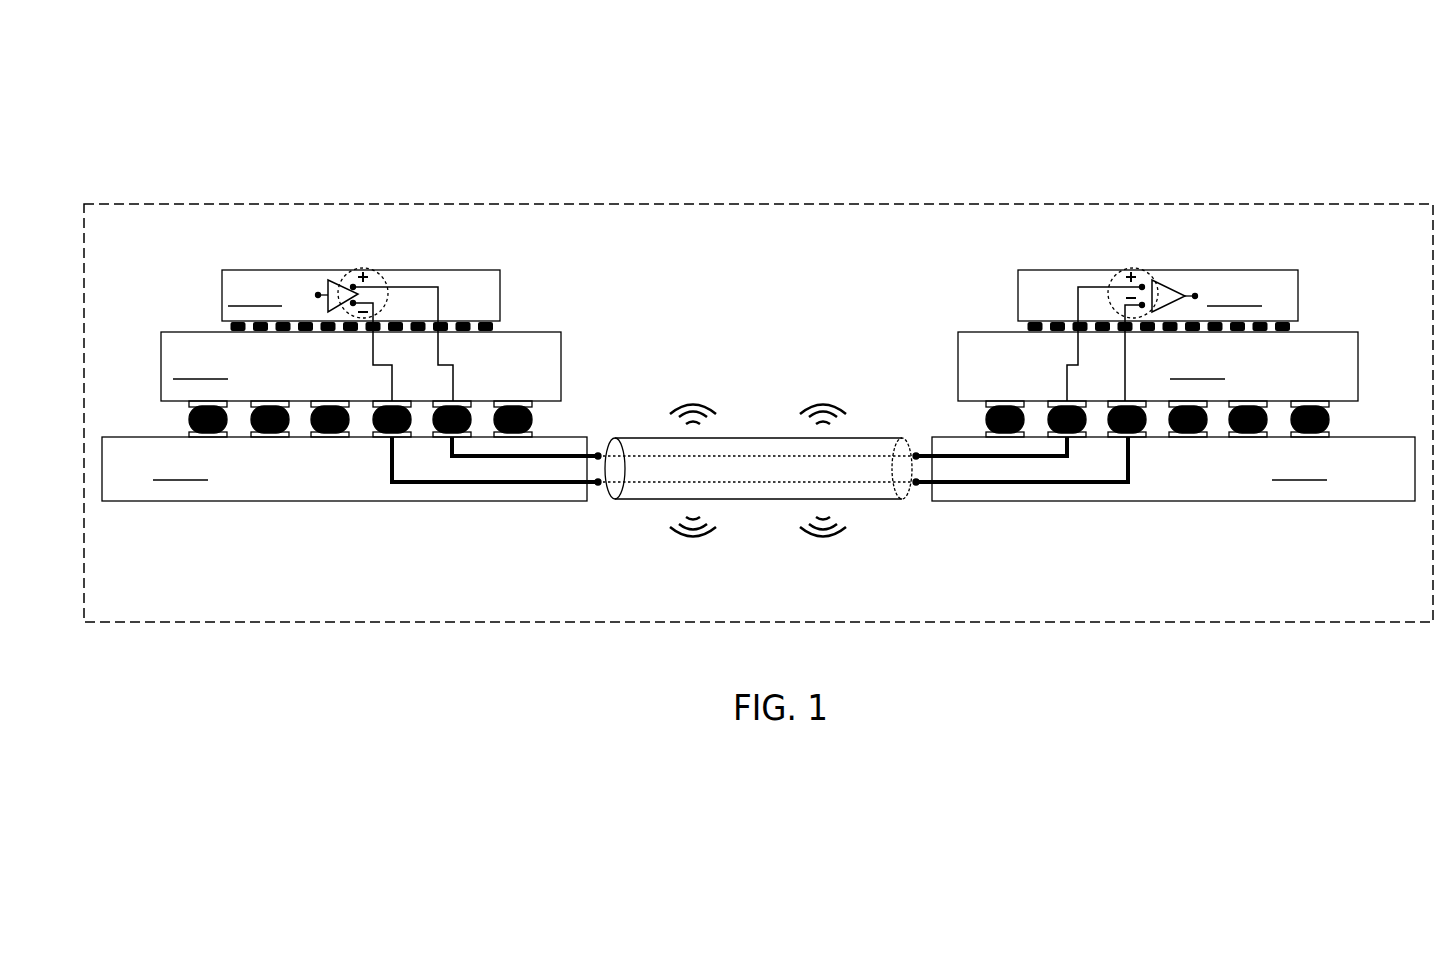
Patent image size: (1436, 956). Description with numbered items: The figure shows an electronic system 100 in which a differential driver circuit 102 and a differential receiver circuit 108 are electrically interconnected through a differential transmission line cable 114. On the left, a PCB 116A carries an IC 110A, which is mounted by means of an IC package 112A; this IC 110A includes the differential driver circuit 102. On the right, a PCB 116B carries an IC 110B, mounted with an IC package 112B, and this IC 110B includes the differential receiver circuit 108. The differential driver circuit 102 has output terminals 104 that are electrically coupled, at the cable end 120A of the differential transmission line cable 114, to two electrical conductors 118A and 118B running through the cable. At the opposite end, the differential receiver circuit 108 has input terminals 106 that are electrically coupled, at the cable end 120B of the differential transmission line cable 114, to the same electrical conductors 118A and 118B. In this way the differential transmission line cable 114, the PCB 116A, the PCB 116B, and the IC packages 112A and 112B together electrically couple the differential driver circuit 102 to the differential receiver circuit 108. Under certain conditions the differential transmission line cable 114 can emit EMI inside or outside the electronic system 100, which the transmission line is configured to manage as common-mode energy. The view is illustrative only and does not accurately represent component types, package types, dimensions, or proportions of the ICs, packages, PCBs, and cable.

The electronic system 100 is at (161, 141).
The differential driver circuit 102 is at (330, 282).
The output terminals 104 is at (368, 270).
The input terminals 106 is at (1130, 268).
The differential receiver circuit 108 is at (1162, 290).
The IC 110A is at (361, 300).
The IC 110B is at (1158, 300).
The IC package 112A is at (361, 384).
The IC package 112B is at (1158, 384).
The differential transmission line cable 114 is at (657, 438).
The PCB 116A is at (351, 469).
The PCB 116B is at (1164, 469).
The electrical conductor 118A is at (762, 453).
The electrical conductor 118B is at (762, 487).
The cable end 120A is at (615, 495).
The cable end 120B is at (903, 495).